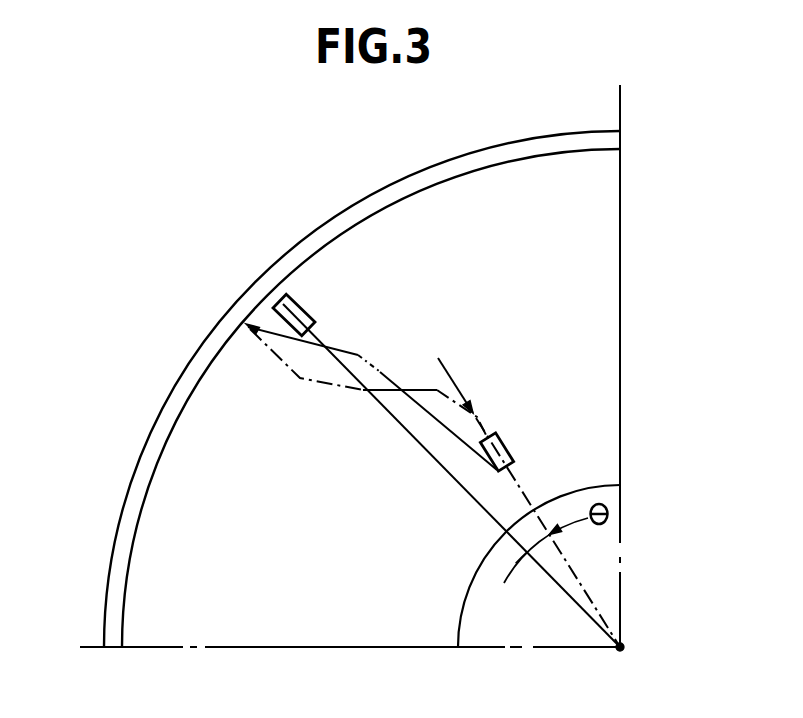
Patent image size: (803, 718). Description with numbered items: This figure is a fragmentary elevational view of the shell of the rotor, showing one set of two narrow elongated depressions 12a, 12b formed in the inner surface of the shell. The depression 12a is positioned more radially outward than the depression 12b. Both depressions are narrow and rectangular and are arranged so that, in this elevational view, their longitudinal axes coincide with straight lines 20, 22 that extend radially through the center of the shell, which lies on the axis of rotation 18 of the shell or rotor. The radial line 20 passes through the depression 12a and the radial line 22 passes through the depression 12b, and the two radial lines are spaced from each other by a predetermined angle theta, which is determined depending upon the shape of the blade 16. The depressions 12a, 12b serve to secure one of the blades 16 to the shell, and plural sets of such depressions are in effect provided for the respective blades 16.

The depression 12a is at (283, 305).
The depression 12b is at (515, 455).
The blade 16 is at (248, 327).
The axis of rotation 18 is at (620, 647).
The radial line 20 is at (380, 406).
The radial line 22 is at (453, 380).